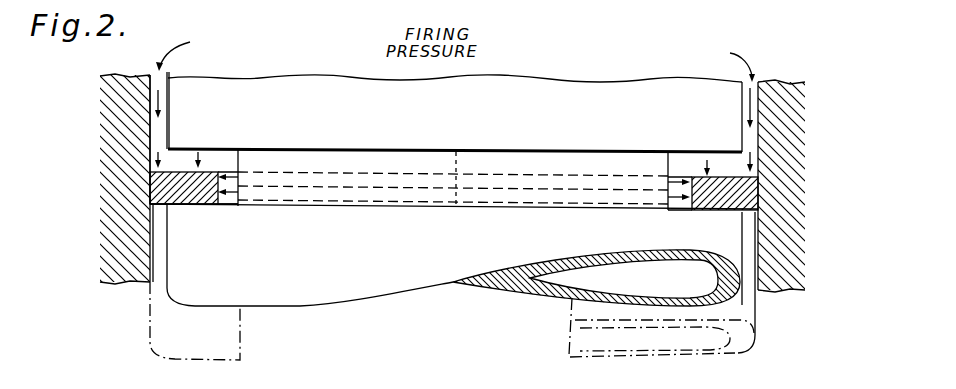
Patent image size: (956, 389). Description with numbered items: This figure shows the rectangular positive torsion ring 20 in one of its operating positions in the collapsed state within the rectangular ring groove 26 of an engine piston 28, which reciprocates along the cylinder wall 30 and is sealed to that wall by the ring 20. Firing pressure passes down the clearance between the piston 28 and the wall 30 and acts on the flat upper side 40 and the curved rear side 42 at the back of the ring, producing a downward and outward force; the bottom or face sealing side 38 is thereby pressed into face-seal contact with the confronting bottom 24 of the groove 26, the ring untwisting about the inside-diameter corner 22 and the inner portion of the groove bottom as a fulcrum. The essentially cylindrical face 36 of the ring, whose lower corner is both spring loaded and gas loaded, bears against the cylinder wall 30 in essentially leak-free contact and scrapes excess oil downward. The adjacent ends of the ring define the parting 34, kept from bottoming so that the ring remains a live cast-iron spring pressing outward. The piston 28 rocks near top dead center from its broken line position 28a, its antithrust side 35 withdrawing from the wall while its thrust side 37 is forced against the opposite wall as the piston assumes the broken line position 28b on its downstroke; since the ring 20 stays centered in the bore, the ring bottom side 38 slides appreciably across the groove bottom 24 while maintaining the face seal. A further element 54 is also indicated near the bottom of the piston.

The rectangular positive torsion ring 20 is at (152, 183).
The narrow width ring of pressure contact 22 is at (220, 202).
The bottom of ring groove 24 is at (690, 206).
The rectangular ring groove 26 is at (180, 162).
The engine piston 28 is at (320, 292).
The broken line position of piston 28a is at (177, 357).
The broken line position of piston 28b is at (760, 321).
The cylinder wall 30 is at (170, 83).
The parting 34 is at (456, 152).
The antithrust side 35 is at (167, 235).
The cylindrical face 36 is at (760, 183).
The thrust side 37 is at (786, 248).
The bottom or face sealing side 38 is at (188, 205).
The flat upper side 40 is at (207, 170).
The curved rear side 42 is at (240, 182).
The wrist pin 54 is at (615, 324).